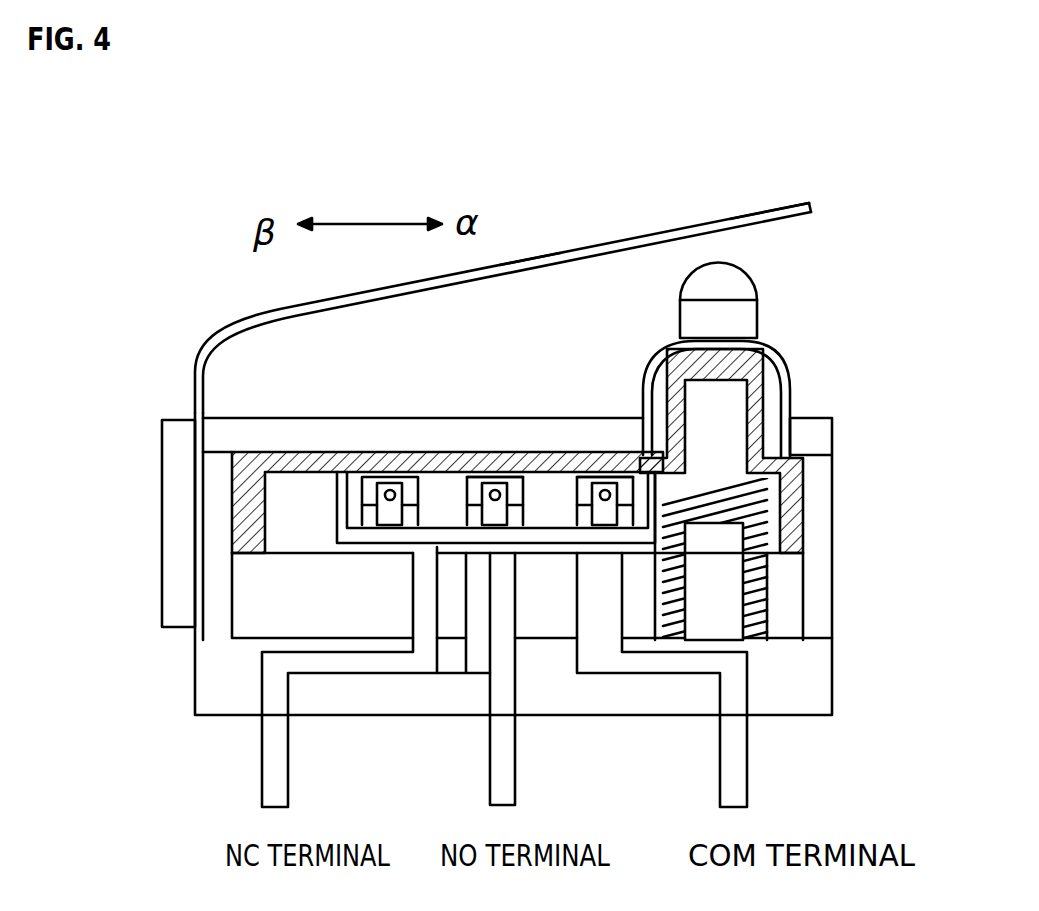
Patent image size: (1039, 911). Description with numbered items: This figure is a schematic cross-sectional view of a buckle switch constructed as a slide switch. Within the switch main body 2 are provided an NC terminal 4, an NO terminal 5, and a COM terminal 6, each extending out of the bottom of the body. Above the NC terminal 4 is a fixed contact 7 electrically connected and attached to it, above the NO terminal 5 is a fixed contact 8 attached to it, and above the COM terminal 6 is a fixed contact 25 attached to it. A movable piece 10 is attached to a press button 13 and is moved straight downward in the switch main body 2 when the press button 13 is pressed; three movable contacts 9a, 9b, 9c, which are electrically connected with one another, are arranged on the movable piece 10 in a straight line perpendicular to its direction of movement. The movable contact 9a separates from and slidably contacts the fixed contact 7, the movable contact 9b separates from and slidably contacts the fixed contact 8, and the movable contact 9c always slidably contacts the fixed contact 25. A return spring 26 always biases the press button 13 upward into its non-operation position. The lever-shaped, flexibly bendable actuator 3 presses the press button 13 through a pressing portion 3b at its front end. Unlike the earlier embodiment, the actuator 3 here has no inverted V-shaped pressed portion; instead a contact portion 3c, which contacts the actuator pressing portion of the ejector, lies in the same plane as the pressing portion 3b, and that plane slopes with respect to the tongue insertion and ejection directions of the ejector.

The switch main body 2 is at (813, 517).
The actuator 3 is at (473, 280).
The pressing portion 3b is at (730, 217).
The contact portion 3c is at (553, 255).
The NC terminal 4 is at (277, 778).
The NO terminal 5 is at (487, 793).
The COM terminal 6 is at (733, 770).
The fixed contact 7 is at (360, 462).
The fixed contact 8 is at (478, 496).
The movable contact 9a is at (388, 488).
The movable contact 9b is at (492, 484).
The movable contact 9c is at (603, 484).
The movable piece 10 is at (551, 537).
The press button 13 is at (743, 282).
The fixed contact 25 is at (573, 495).
The return spring 26 is at (767, 567).